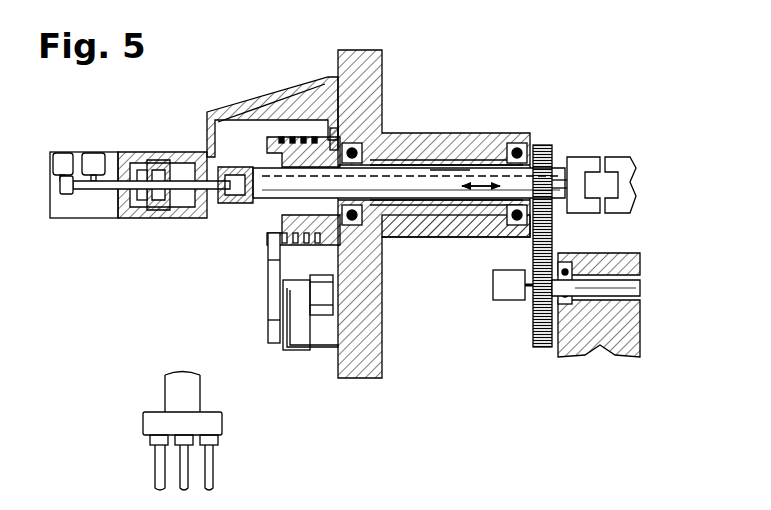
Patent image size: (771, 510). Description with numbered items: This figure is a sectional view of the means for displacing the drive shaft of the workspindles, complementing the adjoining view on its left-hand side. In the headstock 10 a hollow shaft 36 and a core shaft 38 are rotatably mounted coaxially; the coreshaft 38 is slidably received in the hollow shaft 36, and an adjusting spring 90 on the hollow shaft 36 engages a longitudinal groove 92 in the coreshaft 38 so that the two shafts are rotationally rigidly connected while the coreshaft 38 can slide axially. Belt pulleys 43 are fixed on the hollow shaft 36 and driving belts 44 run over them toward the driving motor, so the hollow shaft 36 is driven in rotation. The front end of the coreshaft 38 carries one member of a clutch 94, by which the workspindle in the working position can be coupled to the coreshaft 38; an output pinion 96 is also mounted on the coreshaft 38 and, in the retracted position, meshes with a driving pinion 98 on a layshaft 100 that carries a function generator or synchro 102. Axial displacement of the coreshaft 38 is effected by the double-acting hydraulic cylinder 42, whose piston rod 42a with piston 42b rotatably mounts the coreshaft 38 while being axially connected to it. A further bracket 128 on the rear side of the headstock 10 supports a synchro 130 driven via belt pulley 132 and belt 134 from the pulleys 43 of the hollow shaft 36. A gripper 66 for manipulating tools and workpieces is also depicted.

The headstock 10 is at (338, 55).
The hollow shaft 36 is at (467, 215).
The core shaft 38 is at (425, 215).
The double-acting hydraulic cylinder 42 is at (135, 222).
The piston rod 42a is at (177, 214).
The piston 42b is at (158, 158).
The belt pulleys 43 is at (302, 140).
The driving belts 44 is at (292, 137).
The gripper 66 is at (228, 458).
The adjusting spring 90 is at (402, 170).
The longitudinal groove 92 is at (446, 176).
The clutch 94 is at (594, 140).
The output pinion 96 is at (545, 130).
The driving pinion 98 is at (535, 322).
The layshaft 100 is at (614, 282).
The function generator or synchro 102 is at (502, 290).
The bracket 128 is at (310, 343).
The synchro or function generator 130 is at (325, 285).
The belt pulley 132 is at (280, 298).
The belt 134 is at (268, 245).